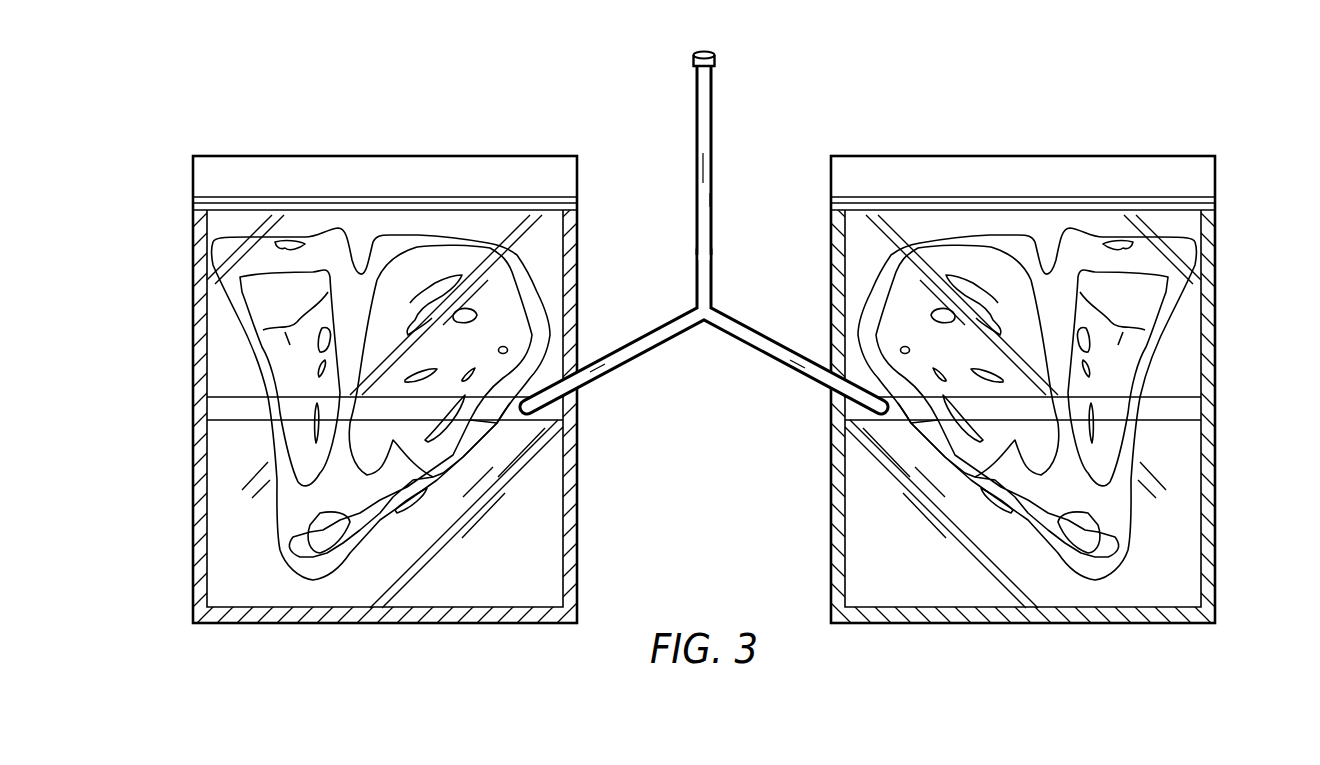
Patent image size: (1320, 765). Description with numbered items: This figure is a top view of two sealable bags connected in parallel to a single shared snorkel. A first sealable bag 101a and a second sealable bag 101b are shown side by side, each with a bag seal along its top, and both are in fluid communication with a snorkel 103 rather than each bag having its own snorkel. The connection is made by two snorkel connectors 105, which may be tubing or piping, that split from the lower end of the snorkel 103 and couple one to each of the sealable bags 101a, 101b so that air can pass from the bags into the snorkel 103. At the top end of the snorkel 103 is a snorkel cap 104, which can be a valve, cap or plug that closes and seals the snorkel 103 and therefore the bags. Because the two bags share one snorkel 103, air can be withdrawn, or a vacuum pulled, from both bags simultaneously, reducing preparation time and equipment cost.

The first sealable bag 101a is at (193, 483).
The second sealable bag 101b is at (1215, 483).
The snorkel 103 is at (712, 115).
The snorkel cap 104 is at (716, 62).
The snorkel connector 105 is at (764, 356).